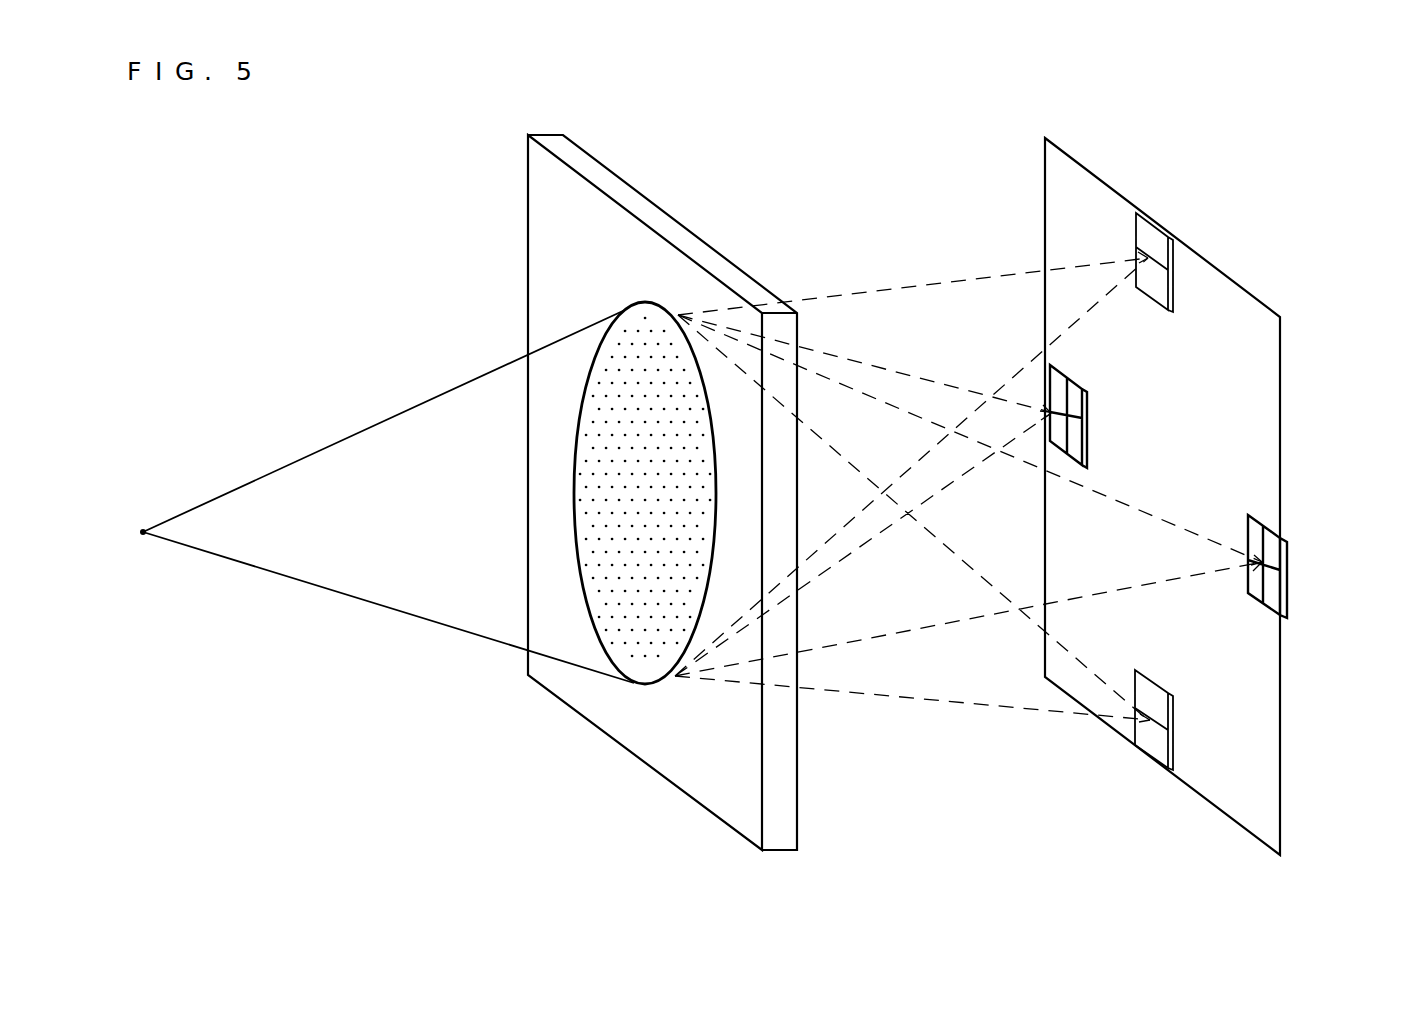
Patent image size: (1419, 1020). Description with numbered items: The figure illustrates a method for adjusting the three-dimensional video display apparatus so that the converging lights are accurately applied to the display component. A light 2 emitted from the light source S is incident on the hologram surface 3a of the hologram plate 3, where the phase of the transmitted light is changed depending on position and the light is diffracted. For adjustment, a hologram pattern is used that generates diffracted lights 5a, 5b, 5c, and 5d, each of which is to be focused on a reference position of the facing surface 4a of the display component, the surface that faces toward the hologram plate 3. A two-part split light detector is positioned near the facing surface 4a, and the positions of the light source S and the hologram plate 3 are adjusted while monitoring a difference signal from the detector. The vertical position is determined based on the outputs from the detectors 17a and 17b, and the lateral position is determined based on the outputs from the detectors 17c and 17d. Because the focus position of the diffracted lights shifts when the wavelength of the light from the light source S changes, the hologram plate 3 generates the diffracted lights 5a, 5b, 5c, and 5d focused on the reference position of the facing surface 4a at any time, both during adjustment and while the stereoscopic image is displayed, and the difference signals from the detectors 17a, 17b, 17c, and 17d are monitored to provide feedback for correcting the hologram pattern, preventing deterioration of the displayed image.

The light source S is at (121, 532).
The light 2 is at (290, 578).
The hologram plate 3 is at (695, 785).
The hologram surface 3a is at (625, 617).
The facing surface 4a is at (1252, 310).
The diffracted light 5a is at (887, 288).
The diffracted light 5b is at (942, 702).
The diffracted light 5c is at (1033, 410).
The diffracted light 5d is at (1173, 527).
The detector 17a is at (1153, 235).
The detector 17b is at (1153, 742).
The detector 17c is at (1078, 412).
The detector 17d is at (1280, 560).